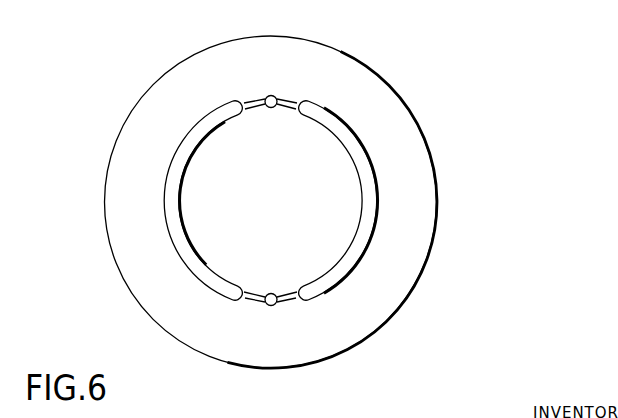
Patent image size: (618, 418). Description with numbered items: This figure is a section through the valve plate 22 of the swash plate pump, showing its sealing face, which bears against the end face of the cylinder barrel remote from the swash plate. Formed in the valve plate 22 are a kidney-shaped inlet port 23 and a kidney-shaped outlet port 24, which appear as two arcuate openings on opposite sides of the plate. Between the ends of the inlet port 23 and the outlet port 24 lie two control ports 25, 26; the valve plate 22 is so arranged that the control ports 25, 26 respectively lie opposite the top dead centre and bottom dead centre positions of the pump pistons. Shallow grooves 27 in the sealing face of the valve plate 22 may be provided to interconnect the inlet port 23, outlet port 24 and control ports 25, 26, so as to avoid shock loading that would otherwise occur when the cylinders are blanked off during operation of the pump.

The valve plate 22 is at (395, 106).
The inlet port 23 is at (373, 197).
The outlet port 24 is at (172, 212).
The control port 25 is at (270, 108).
The control port 26 is at (271, 293).
The shallow grooves 27 is at (285, 97).